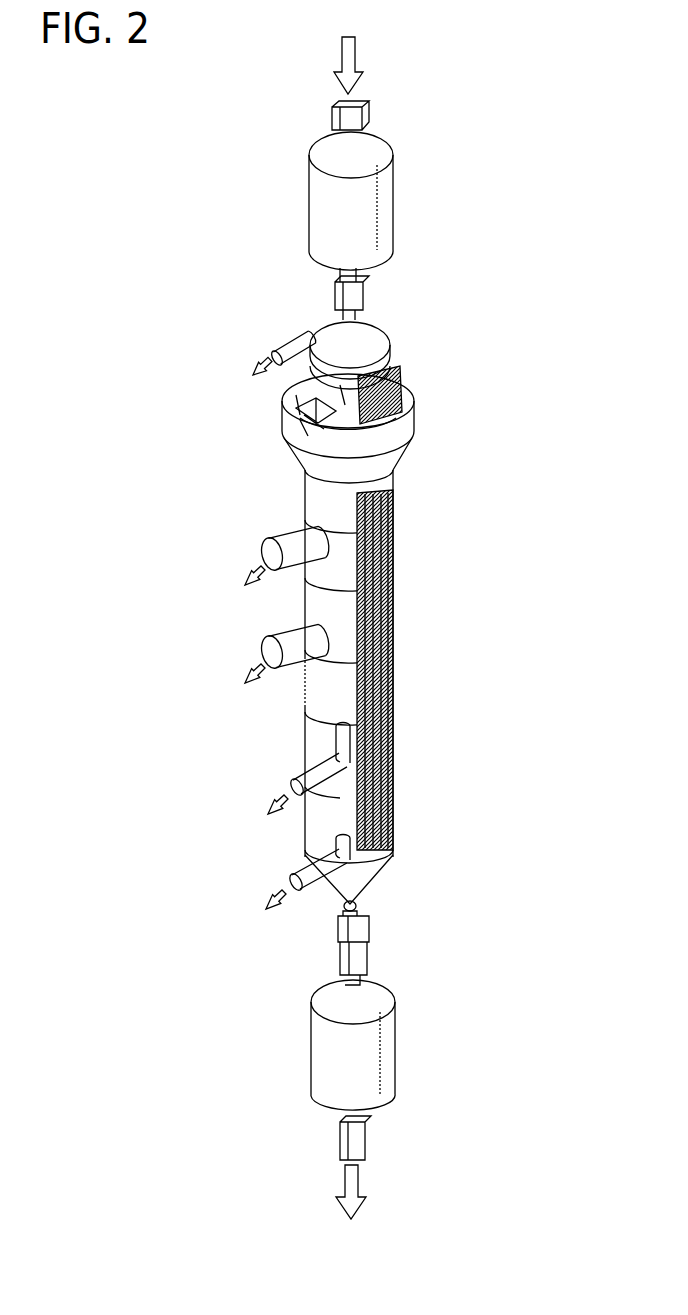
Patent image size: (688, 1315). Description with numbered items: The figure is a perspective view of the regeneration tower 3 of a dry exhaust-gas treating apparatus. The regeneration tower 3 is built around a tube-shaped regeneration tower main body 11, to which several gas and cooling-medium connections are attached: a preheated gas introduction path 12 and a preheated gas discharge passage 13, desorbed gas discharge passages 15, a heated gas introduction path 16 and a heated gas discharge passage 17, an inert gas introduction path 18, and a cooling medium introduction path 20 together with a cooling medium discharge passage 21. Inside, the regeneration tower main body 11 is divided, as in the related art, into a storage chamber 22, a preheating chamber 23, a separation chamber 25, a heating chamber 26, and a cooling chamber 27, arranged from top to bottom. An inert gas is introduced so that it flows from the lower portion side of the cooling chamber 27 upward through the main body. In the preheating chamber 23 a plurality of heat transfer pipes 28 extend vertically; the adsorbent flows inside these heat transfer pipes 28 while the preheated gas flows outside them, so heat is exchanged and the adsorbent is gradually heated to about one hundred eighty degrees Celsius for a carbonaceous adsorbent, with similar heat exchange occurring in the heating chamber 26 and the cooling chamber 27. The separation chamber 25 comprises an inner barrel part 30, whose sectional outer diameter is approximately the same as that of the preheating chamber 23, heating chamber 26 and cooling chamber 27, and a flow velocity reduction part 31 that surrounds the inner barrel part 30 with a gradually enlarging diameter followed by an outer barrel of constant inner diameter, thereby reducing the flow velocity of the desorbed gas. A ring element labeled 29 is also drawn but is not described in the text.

The regeneration tower 3 is at (232, 276).
The regeneration tower main body 11 is at (455, 350).
The preheated gas introduction path 12 is at (307, 457).
The preheated gas discharge passage 13 is at (298, 339).
The desorbed gas discharge passage 15 is at (402, 386).
The heated gas introduction path 16 is at (282, 627).
The heated gas discharge passage 17 is at (284, 534).
The inert gas introduction path 18 is at (364, 909).
The cooling medium introduction path 20 is at (300, 870).
The cooling medium discharge passage 21 is at (300, 779).
The storage chamber 22 is at (372, 340).
The preheating chamber 23 is at (305, 432).
The separation chamber 25 is at (486, 434).
The heating chamber 26 is at (318, 603).
The cooling chamber 27 is at (318, 822).
The heat transfer pipe 28 is at (394, 586).
The ring member 29 is at (415, 404).
The inner barrel part 30 is at (392, 481).
The flow velocity reduction part 31 is at (405, 435).